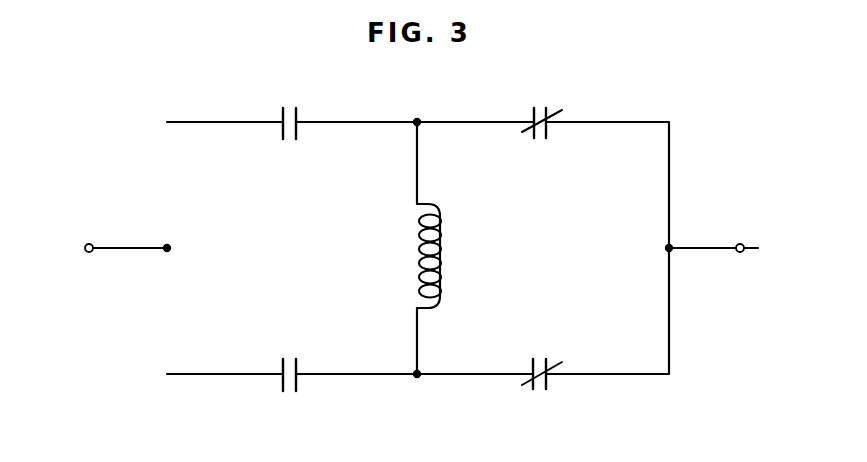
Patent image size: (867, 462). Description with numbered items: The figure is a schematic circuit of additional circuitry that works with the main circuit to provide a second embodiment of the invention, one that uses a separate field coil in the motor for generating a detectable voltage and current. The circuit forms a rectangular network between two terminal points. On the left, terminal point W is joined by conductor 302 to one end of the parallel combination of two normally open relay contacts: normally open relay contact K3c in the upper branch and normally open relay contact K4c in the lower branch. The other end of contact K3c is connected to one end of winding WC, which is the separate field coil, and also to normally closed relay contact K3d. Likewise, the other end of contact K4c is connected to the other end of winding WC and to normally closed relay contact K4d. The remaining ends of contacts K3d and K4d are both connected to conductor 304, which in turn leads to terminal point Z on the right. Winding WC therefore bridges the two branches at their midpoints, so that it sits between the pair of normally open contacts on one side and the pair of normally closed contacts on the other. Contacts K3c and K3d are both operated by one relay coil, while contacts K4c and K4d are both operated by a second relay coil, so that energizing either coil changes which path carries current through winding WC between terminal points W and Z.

The conductor 302 is at (122, 249).
The conductor 304 is at (710, 250).
The terminal point W is at (89, 243).
The terminal point Z is at (769, 249).
The normally open relay contact K3c is at (299, 113).
The normally closed relay contact K3d is at (548, 109).
The normally open relay contact K4c is at (298, 382).
The normally closed relay contact K4d is at (548, 380).
The winding WC is at (441, 266).